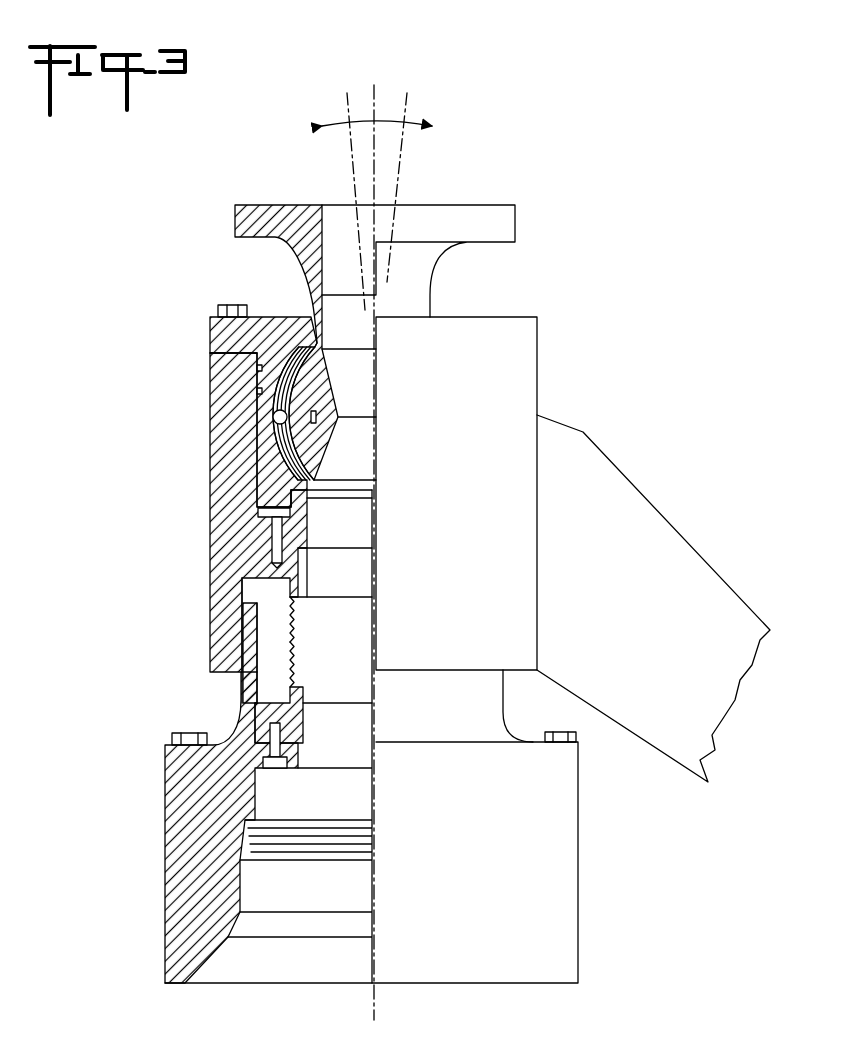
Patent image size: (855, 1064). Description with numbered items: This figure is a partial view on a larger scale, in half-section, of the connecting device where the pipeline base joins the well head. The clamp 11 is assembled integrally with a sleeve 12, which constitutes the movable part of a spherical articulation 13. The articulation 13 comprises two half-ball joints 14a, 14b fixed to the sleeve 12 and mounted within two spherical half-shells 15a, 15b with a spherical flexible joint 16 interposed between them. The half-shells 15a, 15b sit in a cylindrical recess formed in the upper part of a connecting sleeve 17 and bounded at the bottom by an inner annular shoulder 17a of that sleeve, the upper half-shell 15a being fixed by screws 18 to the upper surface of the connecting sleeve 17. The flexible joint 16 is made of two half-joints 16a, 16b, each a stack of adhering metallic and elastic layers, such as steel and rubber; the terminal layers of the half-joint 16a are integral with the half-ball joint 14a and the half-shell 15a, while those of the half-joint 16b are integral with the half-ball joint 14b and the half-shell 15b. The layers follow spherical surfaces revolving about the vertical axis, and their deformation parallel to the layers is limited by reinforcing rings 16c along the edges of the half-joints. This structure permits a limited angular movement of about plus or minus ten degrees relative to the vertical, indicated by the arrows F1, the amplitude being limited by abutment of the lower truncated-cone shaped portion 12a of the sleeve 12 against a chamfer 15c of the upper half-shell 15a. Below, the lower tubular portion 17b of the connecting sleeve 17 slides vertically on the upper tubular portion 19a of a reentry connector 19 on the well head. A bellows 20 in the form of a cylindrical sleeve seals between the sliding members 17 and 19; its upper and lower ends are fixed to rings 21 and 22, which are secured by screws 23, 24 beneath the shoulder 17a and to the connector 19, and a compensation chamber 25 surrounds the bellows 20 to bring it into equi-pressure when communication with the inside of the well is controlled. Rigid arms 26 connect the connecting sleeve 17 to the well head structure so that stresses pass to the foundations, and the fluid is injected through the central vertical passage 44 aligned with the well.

The clamp 11 is at (253, 210).
The sleeve 12 is at (436, 259).
The lower truncated-cone shaped portion 12a is at (327, 349).
The spherical articulation 13 is at (340, 455).
The half-ball joint 14a is at (317, 392).
The half-ball joint 14b is at (332, 438).
The upper half-shell 15a is at (277, 353).
The lower half-shell 15b is at (306, 495).
The chamfer 15c is at (326, 347).
The spherical flexible joint 16 is at (268, 452).
The half-joint 16a is at (276, 367).
The half-joint 16b is at (287, 492).
The reinforcing rings 16c is at (273, 419).
The connecting sleeve 17 is at (222, 382).
The inner annular shoulder 17a is at (300, 530).
The lower tubular portion 17b is at (293, 619).
The screws 18 is at (231, 305).
The reentry connector 19 is at (527, 786).
The upper tubular portion 19a is at (293, 656).
The bellows 20 is at (283, 668).
The ring 21 is at (241, 592).
The ring 22 is at (305, 720).
The screws 23 is at (276, 514).
The screws 24 is at (275, 765).
The compensation chamber 25 is at (260, 632).
The rigid arms 26 is at (676, 530).
The central vertical passage 44 is at (342, 235).
The arrows F1 is at (417, 113).